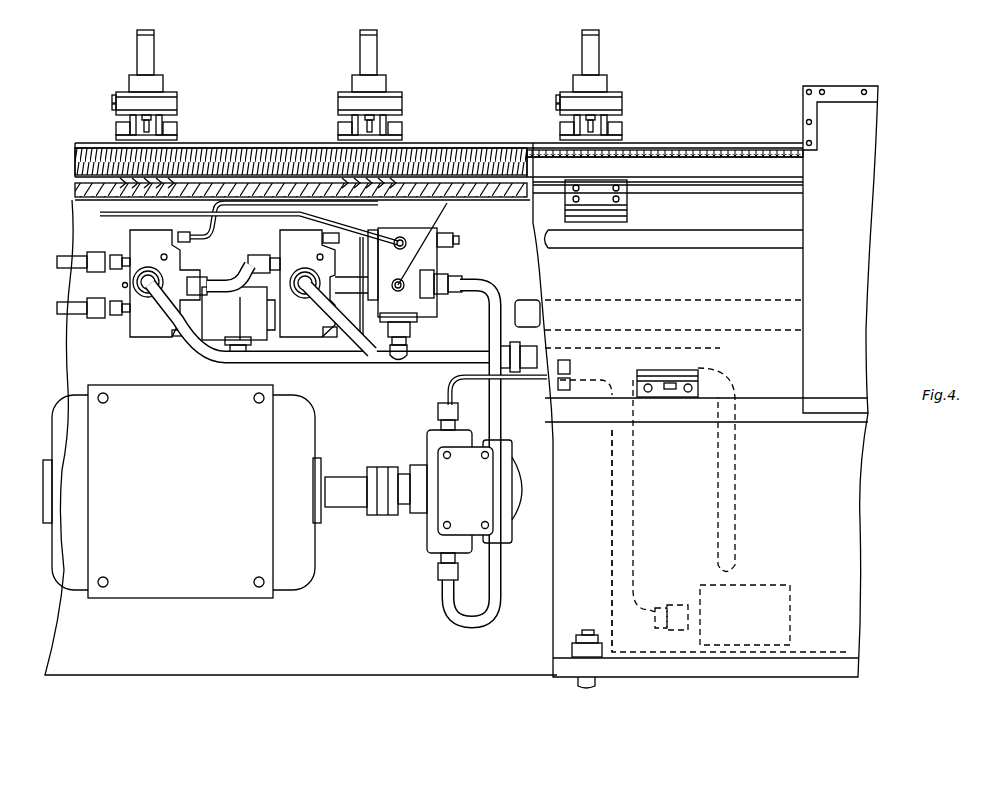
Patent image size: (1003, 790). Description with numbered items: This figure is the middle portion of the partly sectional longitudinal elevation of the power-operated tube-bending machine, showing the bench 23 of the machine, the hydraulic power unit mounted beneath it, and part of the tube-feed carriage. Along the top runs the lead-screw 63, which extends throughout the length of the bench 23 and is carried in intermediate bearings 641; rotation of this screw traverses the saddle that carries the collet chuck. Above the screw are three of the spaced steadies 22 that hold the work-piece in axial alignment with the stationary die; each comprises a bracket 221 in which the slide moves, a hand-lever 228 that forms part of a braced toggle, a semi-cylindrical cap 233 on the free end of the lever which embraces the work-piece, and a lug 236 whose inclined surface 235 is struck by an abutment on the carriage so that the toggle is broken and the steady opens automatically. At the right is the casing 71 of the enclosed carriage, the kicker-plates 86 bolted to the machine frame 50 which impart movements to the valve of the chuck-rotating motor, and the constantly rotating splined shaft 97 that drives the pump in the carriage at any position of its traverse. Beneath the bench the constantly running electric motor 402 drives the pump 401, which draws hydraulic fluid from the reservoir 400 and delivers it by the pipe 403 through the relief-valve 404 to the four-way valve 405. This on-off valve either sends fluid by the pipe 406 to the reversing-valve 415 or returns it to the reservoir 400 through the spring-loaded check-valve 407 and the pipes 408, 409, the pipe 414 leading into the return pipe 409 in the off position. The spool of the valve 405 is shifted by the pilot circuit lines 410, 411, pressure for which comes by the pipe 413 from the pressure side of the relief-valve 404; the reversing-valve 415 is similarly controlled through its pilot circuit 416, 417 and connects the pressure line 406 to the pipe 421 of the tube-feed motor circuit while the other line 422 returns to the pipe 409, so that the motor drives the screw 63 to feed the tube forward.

The steady 22 is at (164, 84).
The bench 23 is at (192, 190).
The machine frame 50 is at (522, 300).
The lead-screw 63 is at (75, 168).
The casing 71 is at (870, 130).
The kicker-plate 86 is at (627, 215).
The splined shaft 97 is at (730, 250).
The bracket 221 is at (178, 130).
The hand-lever 228 is at (155, 64).
The semi-cylindrical cap 233 is at (178, 102).
The inclined surface 235 is at (112, 107).
The lug 236 is at (112, 98).
The reservoir 400 is at (612, 590).
The pump 401 is at (425, 470).
The electric motor 402 is at (305, 557).
The pipe 403 is at (482, 283).
The relief-valve 404 is at (410, 298).
The four-way valve 405 is at (310, 335).
The pipe 406 is at (225, 268).
The spring-loaded check-valve 407 is at (222, 320).
The pipe 408 is at (240, 345).
The return pipe 409 is at (175, 348).
The pilot circuit line 410 is at (385, 222).
The pilot circuit line 411 is at (345, 243).
The pipe 413 is at (446, 236).
The pipe 414 is at (368, 355).
The reversing-valve 415 is at (135, 337).
The pilot circuit line 416 is at (258, 254).
The pilot circuit line 417 is at (205, 236).
The pipe 421 is at (60, 256).
The line 422 is at (60, 314).
The intermediate bearing 641 is at (150, 186).